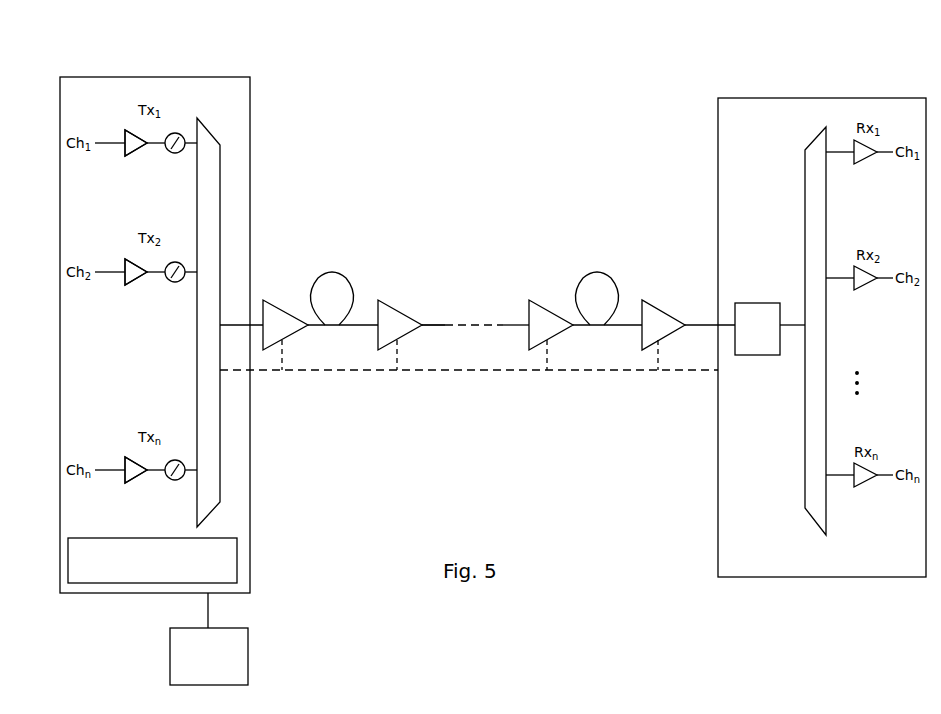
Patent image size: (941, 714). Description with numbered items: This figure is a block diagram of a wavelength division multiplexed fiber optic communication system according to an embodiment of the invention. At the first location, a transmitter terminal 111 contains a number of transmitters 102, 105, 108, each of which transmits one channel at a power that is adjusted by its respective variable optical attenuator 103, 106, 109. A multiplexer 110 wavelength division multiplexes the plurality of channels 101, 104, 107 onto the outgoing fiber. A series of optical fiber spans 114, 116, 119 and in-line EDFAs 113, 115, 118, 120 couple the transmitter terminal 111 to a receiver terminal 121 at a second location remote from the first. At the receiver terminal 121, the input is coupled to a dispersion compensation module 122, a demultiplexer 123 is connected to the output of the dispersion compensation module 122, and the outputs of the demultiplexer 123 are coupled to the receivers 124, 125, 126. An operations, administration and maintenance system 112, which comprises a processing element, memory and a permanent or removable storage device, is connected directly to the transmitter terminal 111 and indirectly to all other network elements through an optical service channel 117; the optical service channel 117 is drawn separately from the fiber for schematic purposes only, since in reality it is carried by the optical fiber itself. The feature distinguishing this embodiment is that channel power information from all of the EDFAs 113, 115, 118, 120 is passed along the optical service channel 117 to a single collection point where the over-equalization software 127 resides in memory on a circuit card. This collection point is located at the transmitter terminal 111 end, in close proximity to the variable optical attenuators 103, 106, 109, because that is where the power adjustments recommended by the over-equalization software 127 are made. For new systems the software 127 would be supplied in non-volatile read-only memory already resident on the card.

The channel 101 is at (119, 120).
The transmitter 102 is at (124, 162).
The variable optical attenuator 103 is at (166, 164).
The channel 104 is at (120, 249).
The transmitter 105 is at (124, 291).
The variable optical attenuator 106 is at (166, 292).
The channel 107 is at (119, 448).
The transmitter 108 is at (124, 489).
The variable optical attenuator 109 is at (166, 490).
The multiplexer 110 is at (219, 308).
The transmitter terminal 111 is at (165, 309).
The operations, administration and maintenance system 112 is at (233, 631).
The in-line EDFA 113 is at (280, 321).
The optical fiber span 114 is at (333, 281).
The in-line EDFA 115 is at (394, 321).
The optical fiber span 116 is at (436, 294).
The optical service channel 117 is at (469, 400).
The in-line EDFA 118 is at (547, 322).
The optical fiber span 119 is at (596, 282).
The in-line EDFA 120 is at (667, 322).
The receiver terminal 121 is at (822, 307).
The dispersion compensation module 122 is at (757, 298).
The demultiplexer 123 is at (790, 319).
The receiver 124 is at (859, 175).
The receiver 125 is at (859, 301).
The receiver 126 is at (859, 498).
The over-equalization software 127 is at (152, 591).